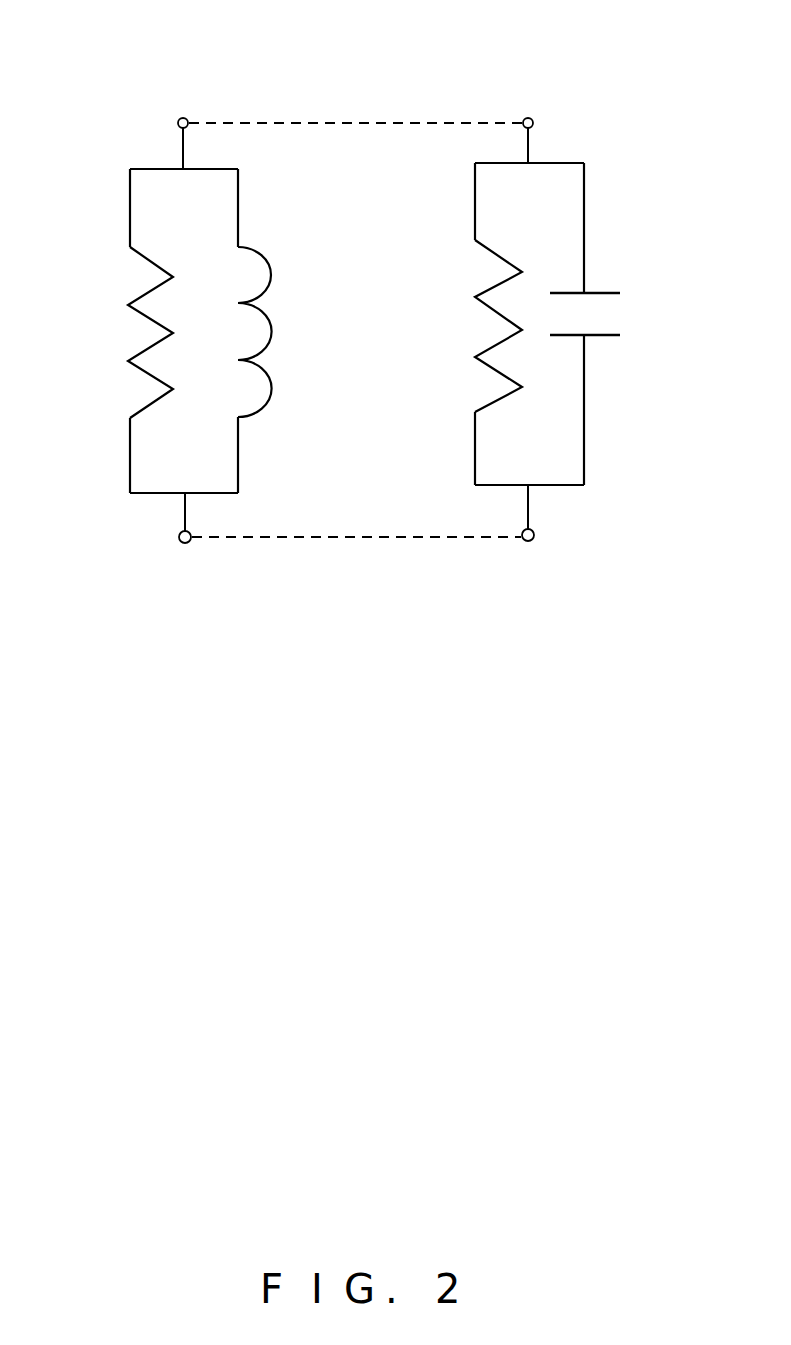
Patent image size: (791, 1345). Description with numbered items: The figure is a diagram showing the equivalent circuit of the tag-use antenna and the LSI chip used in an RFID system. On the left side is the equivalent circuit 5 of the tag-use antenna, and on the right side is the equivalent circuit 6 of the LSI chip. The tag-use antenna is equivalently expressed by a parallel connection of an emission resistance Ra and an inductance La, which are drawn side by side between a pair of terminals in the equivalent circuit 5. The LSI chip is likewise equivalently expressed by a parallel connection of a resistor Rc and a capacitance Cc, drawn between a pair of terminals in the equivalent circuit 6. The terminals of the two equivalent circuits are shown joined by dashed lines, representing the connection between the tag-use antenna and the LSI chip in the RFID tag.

The equivalent circuit of the tag-use antenna 5 is at (110, 135).
The equivalent circuit of the LSI chip 6 is at (615, 133).
The emission resistance Ra is at (127, 331).
The inductance La is at (284, 331).
The resistor Rc is at (472, 324).
The capacitance Cc is at (613, 324).